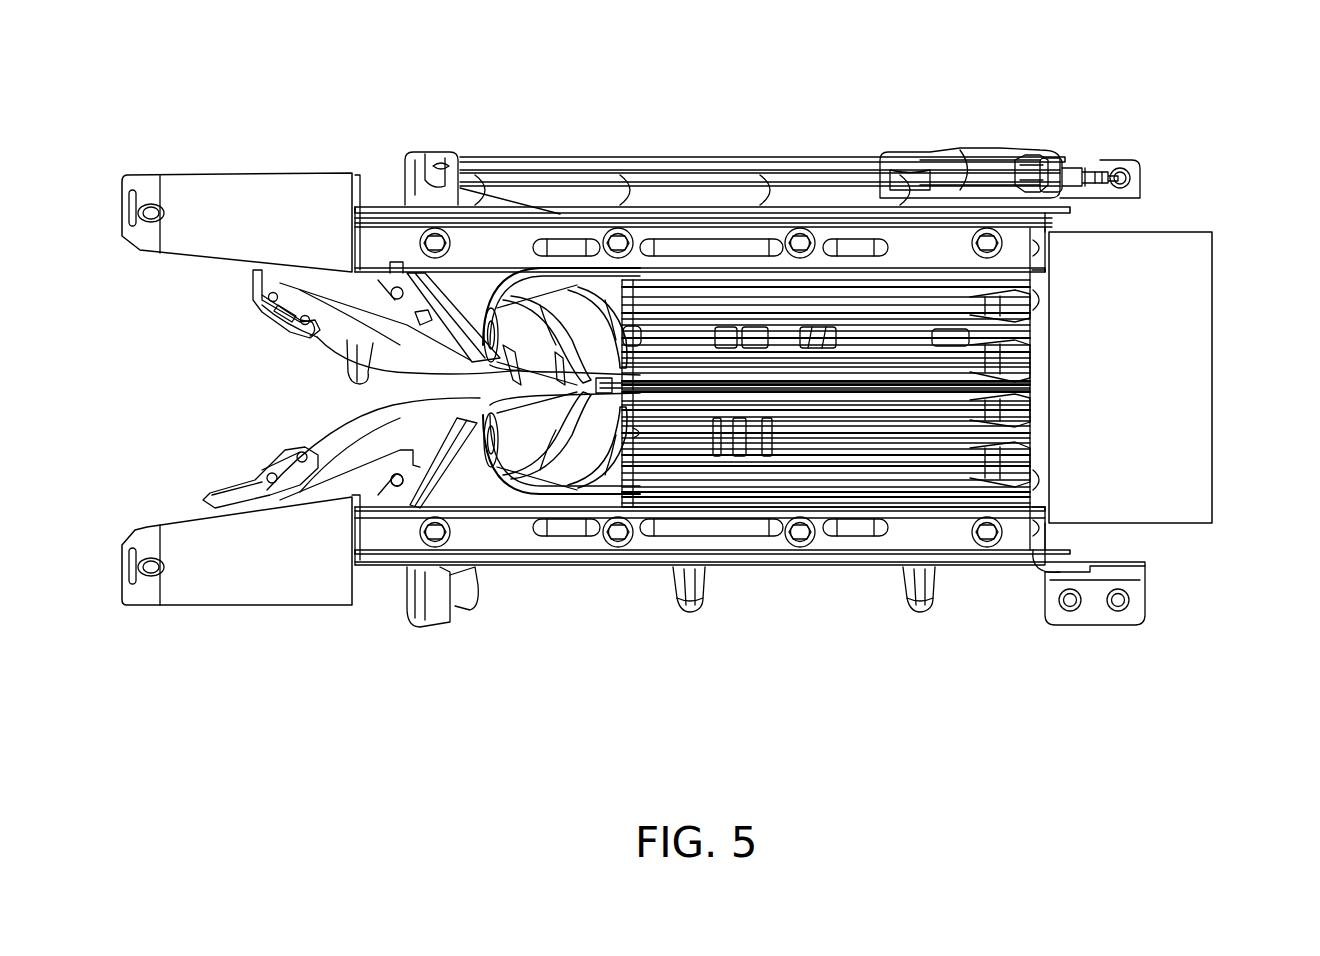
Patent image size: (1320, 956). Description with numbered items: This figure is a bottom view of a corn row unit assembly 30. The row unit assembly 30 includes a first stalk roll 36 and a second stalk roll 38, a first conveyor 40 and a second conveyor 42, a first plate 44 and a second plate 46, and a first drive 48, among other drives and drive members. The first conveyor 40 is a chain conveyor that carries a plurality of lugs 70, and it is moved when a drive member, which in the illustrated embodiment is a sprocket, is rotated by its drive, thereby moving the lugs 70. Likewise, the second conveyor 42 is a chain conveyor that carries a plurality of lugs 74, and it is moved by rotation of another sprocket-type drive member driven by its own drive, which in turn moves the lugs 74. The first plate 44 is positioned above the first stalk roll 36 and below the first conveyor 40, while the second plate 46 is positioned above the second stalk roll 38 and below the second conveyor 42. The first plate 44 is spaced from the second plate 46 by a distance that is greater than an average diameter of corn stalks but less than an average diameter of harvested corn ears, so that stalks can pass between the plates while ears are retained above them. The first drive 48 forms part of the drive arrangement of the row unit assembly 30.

The row unit assembly 30 is at (912, 61).
The first stalk roll 36 is at (663, 307).
The second stalk roll 38 is at (828, 447).
The first conveyor 40 is at (252, 293).
The second conveyor 42 is at (282, 460).
The first plate 44 is at (342, 317).
The second plate 46 is at (360, 440).
The first drive 48 is at (1192, 382).
The lugs 70 is at (372, 378).
The lugs 74 is at (690, 604).